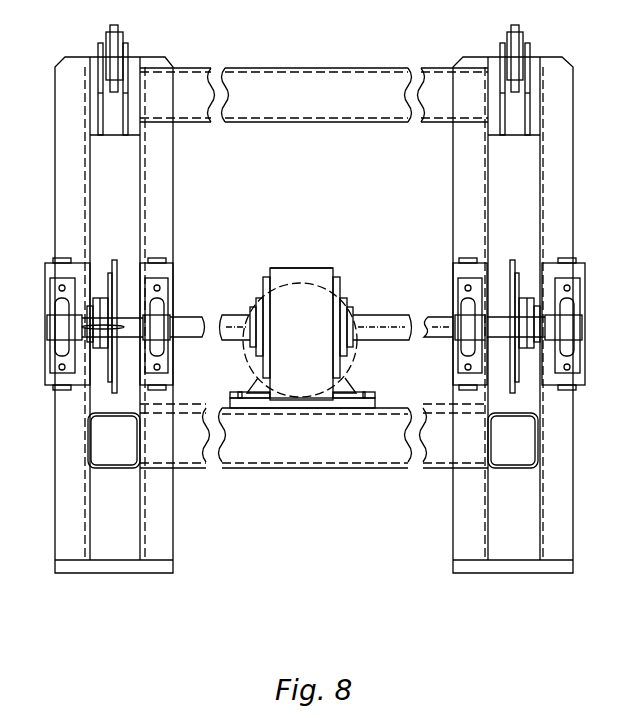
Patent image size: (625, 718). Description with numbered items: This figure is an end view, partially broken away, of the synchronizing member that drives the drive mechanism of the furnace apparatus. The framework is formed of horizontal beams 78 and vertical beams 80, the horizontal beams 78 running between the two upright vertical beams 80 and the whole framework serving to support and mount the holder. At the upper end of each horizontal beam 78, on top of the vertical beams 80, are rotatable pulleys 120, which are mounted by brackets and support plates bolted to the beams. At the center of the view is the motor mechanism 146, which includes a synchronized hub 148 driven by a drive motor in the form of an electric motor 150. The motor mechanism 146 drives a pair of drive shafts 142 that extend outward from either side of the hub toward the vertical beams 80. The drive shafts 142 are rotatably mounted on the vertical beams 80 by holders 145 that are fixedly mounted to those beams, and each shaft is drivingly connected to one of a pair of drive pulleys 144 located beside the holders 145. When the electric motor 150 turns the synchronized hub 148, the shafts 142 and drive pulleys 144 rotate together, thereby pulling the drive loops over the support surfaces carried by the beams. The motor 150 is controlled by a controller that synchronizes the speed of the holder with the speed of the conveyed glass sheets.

The horizontal beams 78 is at (335, 68).
The vertical beams 80 is at (80, 183).
The pulleys 120 is at (138, 32).
The drive shafts 142 is at (250, 292).
The drive pulleys 144 is at (120, 280).
The holders 145 is at (157, 357).
The motor mechanism 146 is at (352, 246).
The synchronized hub 148 is at (297, 246).
The electric motor 150 is at (355, 355).